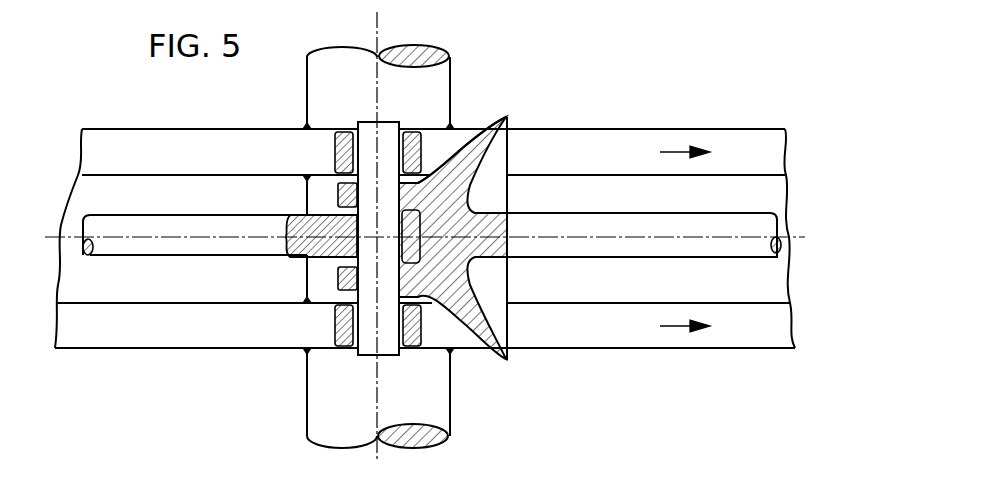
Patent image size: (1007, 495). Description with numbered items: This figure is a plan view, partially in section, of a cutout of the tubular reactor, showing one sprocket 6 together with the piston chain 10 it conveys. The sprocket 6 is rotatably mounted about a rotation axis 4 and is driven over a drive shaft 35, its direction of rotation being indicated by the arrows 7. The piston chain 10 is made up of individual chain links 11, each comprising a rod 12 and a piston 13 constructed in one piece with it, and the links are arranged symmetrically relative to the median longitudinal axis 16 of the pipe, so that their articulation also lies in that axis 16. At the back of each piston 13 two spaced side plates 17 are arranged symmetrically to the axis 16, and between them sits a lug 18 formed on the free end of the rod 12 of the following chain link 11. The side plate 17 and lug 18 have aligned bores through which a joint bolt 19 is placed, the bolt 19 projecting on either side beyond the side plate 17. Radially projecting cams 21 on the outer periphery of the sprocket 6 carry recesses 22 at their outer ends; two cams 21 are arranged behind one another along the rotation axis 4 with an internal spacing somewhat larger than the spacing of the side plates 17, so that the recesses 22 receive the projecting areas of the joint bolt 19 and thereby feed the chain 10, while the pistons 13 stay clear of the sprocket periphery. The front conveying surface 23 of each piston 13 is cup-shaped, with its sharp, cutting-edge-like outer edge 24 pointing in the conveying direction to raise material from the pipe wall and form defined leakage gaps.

The rotation axis 4 is at (378, 20).
The sprocket 6 is at (156, 335).
The arrows 7 is at (662, 150).
The piston chain 10 is at (575, 213).
The chain link 11 is at (129, 216).
The rod 12 is at (181, 225).
The piston 13 is at (497, 360).
The median longitudinal axis 16 is at (598, 236).
The side plate 17 is at (339, 196).
The lug 18 is at (340, 248).
The joint bolt 19 is at (388, 338).
The cam 21 is at (336, 150).
The recess 22 is at (353, 131).
The conveying surface 23 is at (483, 160).
The outer edge 24 is at (508, 119).
The drive shaft 35 is at (349, 60).